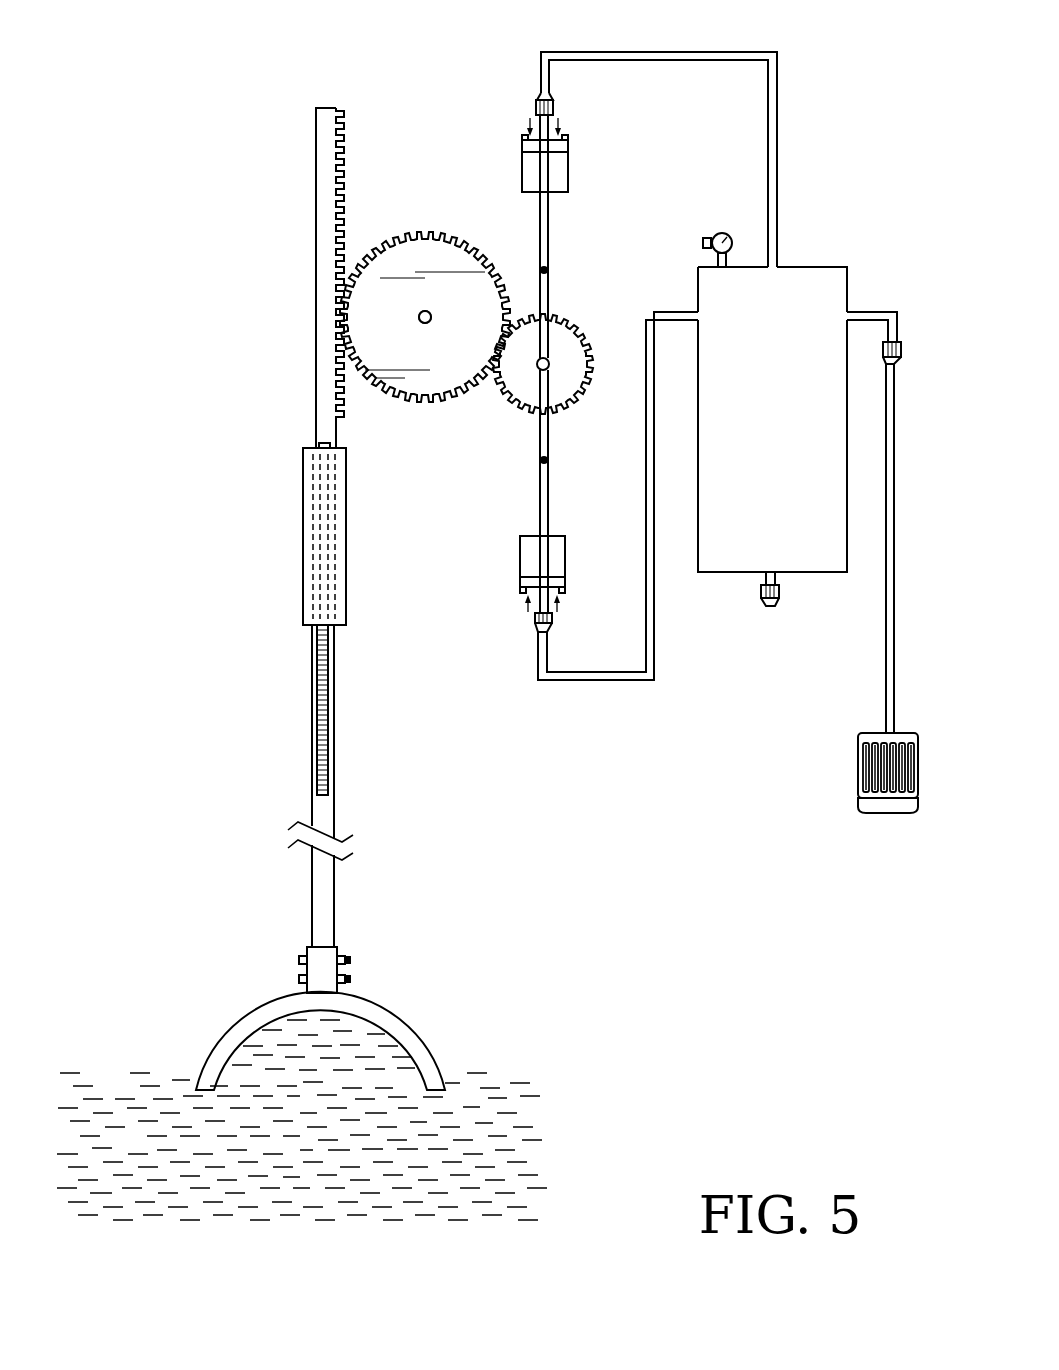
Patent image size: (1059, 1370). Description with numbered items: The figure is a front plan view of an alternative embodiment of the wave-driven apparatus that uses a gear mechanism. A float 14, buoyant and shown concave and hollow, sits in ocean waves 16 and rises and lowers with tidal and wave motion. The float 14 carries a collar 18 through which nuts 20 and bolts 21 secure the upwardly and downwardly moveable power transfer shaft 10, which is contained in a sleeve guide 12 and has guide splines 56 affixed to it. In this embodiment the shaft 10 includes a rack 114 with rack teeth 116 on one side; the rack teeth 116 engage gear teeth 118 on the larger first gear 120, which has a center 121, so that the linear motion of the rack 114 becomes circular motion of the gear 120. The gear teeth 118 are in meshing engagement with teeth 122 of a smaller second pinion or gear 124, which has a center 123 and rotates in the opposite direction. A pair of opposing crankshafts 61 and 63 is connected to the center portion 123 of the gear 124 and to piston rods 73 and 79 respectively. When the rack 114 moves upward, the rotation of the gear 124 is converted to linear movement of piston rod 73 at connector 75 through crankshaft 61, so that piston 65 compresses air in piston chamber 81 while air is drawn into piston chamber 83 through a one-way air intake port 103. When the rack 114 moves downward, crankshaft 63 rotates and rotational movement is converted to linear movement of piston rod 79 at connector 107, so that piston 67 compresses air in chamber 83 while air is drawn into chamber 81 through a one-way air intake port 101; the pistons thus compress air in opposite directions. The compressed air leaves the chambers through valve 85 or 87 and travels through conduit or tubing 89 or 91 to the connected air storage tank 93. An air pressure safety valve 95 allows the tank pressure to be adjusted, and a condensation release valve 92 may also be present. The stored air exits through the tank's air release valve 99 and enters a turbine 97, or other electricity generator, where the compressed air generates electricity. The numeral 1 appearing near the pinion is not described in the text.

The pinion axis 1 is at (497, 364).
The power transfer shaft 10 is at (288, 207).
The sleeve guide 12 is at (303, 527).
The float 14 is at (430, 1055).
The waves 16 is at (117, 1097).
The collar 18 is at (337, 947).
The nuts 20 is at (299, 960).
The bolts 21 is at (350, 960).
The guide splines 56 is at (328, 670).
The crankshaft 61 is at (548, 298).
The crankshaft 63 is at (540, 440).
The piston 65 is at (522, 155).
The piston 67 is at (522, 576).
The piston rod 73 is at (540, 208).
The connector 75 is at (542, 270).
The piston rod 79 is at (548, 520).
The piston chamber 81 is at (568, 182).
The piston chamber 83 is at (522, 537).
The valve 85 is at (536, 632).
The valve 87 is at (553, 101).
The conduit or tubing 89 is at (590, 683).
The conduit or tubing 91 is at (650, 52).
The condensation release valve 92 is at (775, 598).
The air storage tank 93 is at (828, 267).
The air pressure safety valve 95 is at (720, 230).
The turbine 97 is at (858, 770).
The air release valve 99 is at (900, 345).
The one-way air intake port 101 is at (522, 139).
The one-way air intake port 103 is at (520, 595).
The connector 107 is at (548, 460).
The rack 114 is at (328, 108).
The rack teeth 116 is at (345, 128).
The gear teeth 118 is at (437, 232).
The first gear 120 is at (377, 229).
The center 121 is at (419, 324).
The teeth 122 is at (502, 400).
The center 123 is at (549, 364).
The second pinion or gear 124 is at (588, 305).